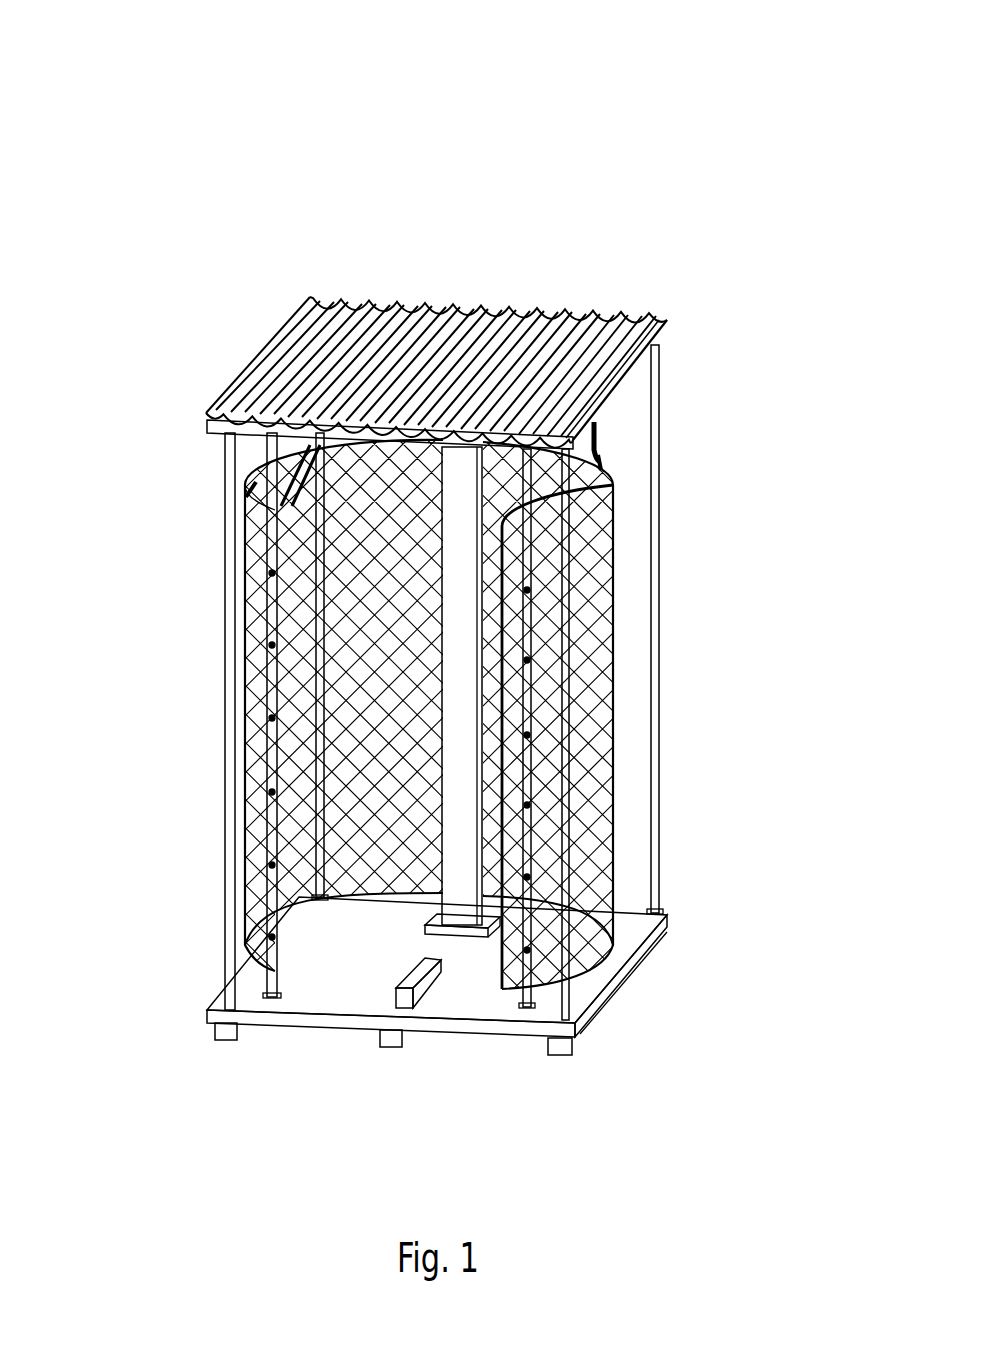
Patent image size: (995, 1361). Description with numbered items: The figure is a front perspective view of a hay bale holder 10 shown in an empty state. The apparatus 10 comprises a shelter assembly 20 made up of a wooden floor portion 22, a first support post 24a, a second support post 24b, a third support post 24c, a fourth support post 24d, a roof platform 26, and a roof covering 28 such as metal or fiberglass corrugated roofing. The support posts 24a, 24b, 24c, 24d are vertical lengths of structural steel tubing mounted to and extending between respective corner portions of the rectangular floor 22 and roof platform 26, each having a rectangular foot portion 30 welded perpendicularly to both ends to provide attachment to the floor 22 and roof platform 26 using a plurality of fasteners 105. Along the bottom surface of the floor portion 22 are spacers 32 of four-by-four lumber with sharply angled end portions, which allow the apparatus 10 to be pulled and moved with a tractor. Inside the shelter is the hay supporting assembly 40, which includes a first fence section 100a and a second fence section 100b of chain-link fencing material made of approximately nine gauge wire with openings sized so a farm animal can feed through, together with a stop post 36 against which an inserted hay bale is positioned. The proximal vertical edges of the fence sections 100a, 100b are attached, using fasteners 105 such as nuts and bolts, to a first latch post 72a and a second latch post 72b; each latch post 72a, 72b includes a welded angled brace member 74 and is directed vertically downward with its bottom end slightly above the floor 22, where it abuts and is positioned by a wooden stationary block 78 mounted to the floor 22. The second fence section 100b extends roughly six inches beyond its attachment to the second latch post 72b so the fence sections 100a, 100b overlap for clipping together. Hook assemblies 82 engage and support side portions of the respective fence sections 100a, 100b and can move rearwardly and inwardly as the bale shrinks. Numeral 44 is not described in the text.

The hay bale holder 10 is at (84, 178).
The shelter assembly 20 is at (485, 316).
The wooden floor portion 22 is at (338, 1000).
The first support post 24a is at (225, 689).
The second support post 24b is at (567, 665).
The third support post 24c is at (313, 633).
The fourth support post 24d is at (660, 748).
The roof platform 26 is at (670, 323).
The roof covering 28 is at (597, 312).
The rectangular foot portion 30 is at (205, 1014).
The spacer 32 is at (225, 1040).
The stop post 36 is at (435, 925).
The hay supporting assembly 40 is at (710, 573).
The mesh wall 44 is at (635, 621).
The first latch post 72a is at (262, 450).
The second latch post 72b is at (504, 548).
The angled brace member 74 is at (602, 463).
The wooden stationary block 78 is at (412, 985).
The hook assembly 82 is at (598, 436).
The first fence section 100a is at (250, 913).
The second fence section 100b is at (532, 806).
The fasteners 105 is at (268, 868).